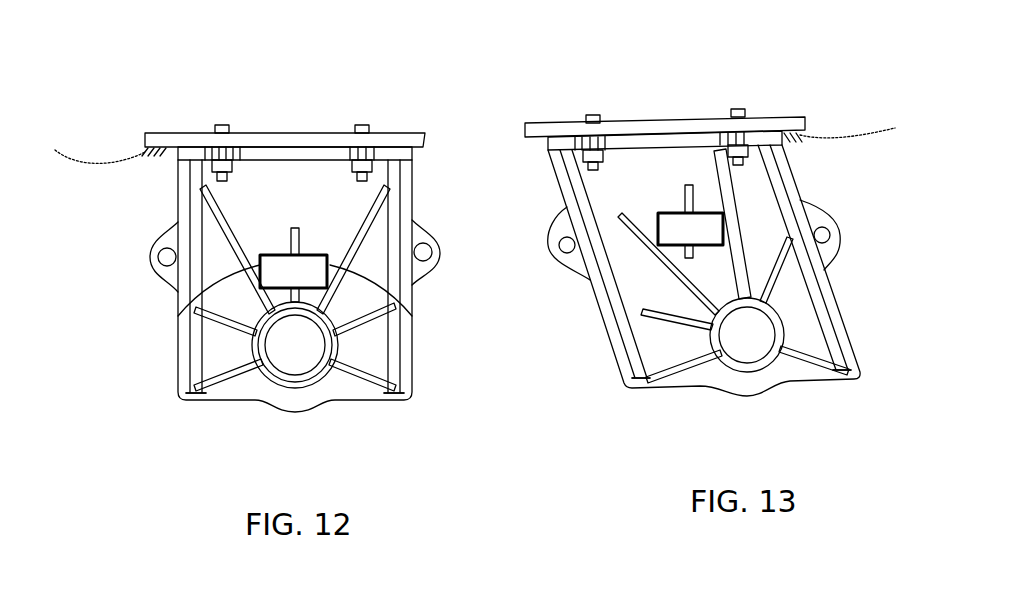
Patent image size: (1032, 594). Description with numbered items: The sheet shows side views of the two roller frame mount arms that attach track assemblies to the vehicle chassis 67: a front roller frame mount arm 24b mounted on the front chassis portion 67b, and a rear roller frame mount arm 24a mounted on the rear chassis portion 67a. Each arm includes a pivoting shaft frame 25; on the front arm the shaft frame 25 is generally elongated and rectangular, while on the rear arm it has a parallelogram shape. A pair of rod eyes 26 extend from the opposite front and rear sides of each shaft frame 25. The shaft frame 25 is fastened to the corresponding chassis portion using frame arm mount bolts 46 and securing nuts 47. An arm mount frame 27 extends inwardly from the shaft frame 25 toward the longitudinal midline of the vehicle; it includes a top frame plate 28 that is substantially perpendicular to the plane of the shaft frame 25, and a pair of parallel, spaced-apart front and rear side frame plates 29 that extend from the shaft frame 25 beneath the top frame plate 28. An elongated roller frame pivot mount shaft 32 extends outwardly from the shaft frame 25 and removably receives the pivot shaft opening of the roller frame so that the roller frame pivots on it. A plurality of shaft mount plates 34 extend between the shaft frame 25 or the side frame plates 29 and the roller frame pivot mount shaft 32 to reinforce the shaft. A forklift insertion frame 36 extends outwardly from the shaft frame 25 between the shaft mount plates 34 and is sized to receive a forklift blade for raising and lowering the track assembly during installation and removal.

In FIG. 13, the rear roller frame mount arm 24a is at (600, 374).
In FIG. 12, the front roller frame mount arm 24b is at (175, 357).
In FIG. 12, the shaft frame 25 is at (410, 197).
In FIG. 13, the shaft frame 25 is at (804, 184).
In FIG. 12, the rod eye 26 is at (152, 250).
In FIG. 13, the rod eye 26 is at (549, 243).
In FIG. 12, the arm mount frame 27 is at (93, 153).
In FIG. 13, the arm mount frame 27 is at (855, 127).
In FIG. 12, the top frame plate 28 is at (426, 140).
In FIG. 13, the top frame plate 28 is at (547, 148).
In FIG. 12, the side frame plate 29 is at (186, 391).
In FIG. 13, the side frame plate 29 is at (618, 319).
In FIG. 12, the roller frame pivot mount shaft 32 is at (298, 350).
In FIG. 13, the roller frame pivot mount shaft 32 is at (746, 340).
In FIG. 12, the shaft mount plate 34 is at (198, 333).
In FIG. 13, the shaft mount plate 34 is at (705, 296).
In FIG. 12, the forklift insertion frame 36 is at (275, 255).
In FIG. 13, the forklift insertion frame 36 is at (660, 220).
In FIG. 12, the frame arm mount bolt 46 is at (362, 124).
In FIG. 13, the frame arm mount bolt 46 is at (738, 108).
In FIG. 12, the securing nut 47 is at (360, 176).
In FIG. 13, the securing nut 47 is at (600, 171).
In FIG. 12, the vehicle chassis 67 is at (146, 130).
In FIG. 13, the vehicle chassis 67 is at (530, 121).
In FIG. 13, the rear chassis portion 67a is at (556, 122).
In FIG. 12, the front chassis portion 67b is at (179, 133).